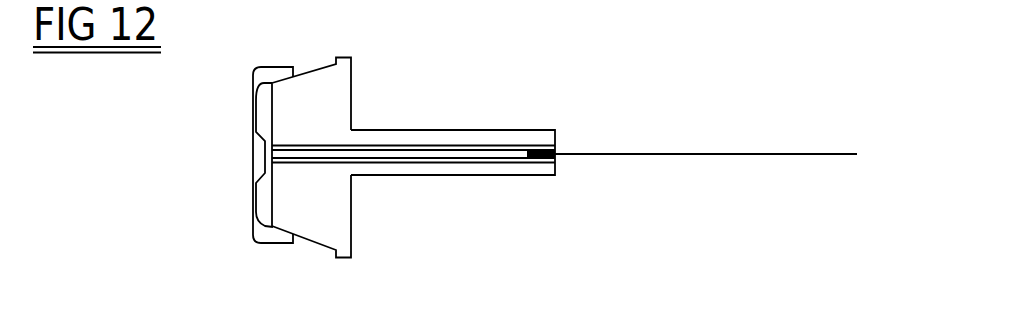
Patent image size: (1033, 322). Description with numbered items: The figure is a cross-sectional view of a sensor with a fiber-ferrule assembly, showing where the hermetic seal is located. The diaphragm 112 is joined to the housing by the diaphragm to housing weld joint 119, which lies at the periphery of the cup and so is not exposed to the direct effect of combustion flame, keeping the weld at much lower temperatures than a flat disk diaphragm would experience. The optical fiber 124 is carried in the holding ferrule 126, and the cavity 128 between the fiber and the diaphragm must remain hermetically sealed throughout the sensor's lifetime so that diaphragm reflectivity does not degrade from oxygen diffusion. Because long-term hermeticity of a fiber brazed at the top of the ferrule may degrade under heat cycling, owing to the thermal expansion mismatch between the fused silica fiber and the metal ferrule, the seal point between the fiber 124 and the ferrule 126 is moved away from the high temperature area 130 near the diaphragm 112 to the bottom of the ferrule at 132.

The diaphragm 112 is at (253, 107).
The diaphragm to housing weld joint 119 is at (293, 77).
The optical fiber 124 is at (733, 152).
The holding ferrule 126 is at (485, 175).
The cavity 128 is at (262, 204).
The high temperature area 130 is at (184, 144).
The seal point at the bottom of the ferrule 132 is at (556, 155).